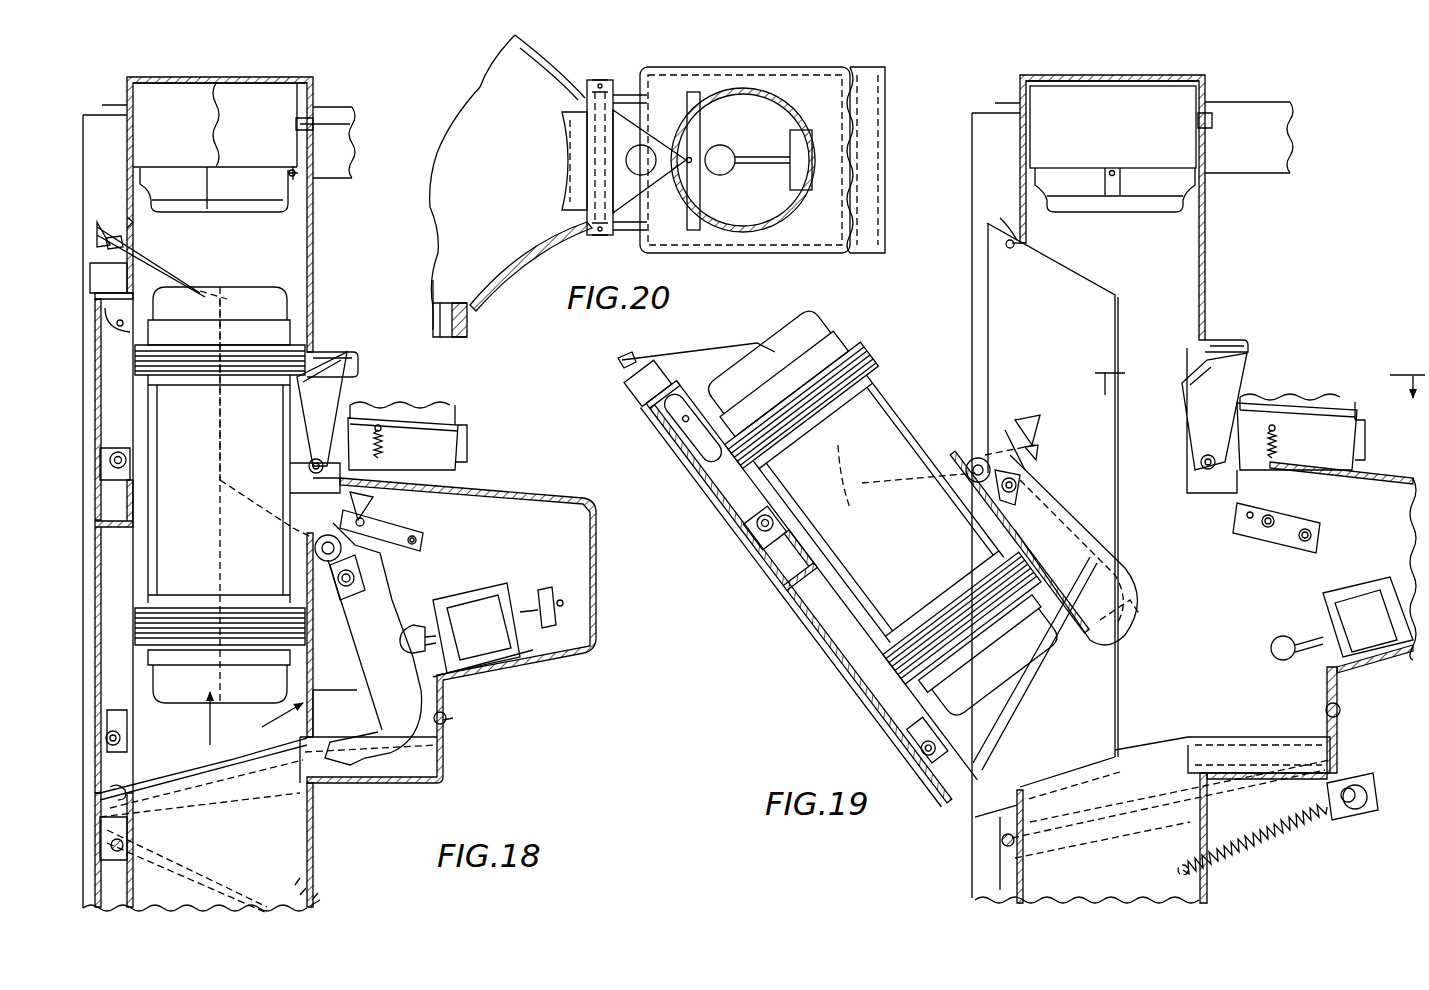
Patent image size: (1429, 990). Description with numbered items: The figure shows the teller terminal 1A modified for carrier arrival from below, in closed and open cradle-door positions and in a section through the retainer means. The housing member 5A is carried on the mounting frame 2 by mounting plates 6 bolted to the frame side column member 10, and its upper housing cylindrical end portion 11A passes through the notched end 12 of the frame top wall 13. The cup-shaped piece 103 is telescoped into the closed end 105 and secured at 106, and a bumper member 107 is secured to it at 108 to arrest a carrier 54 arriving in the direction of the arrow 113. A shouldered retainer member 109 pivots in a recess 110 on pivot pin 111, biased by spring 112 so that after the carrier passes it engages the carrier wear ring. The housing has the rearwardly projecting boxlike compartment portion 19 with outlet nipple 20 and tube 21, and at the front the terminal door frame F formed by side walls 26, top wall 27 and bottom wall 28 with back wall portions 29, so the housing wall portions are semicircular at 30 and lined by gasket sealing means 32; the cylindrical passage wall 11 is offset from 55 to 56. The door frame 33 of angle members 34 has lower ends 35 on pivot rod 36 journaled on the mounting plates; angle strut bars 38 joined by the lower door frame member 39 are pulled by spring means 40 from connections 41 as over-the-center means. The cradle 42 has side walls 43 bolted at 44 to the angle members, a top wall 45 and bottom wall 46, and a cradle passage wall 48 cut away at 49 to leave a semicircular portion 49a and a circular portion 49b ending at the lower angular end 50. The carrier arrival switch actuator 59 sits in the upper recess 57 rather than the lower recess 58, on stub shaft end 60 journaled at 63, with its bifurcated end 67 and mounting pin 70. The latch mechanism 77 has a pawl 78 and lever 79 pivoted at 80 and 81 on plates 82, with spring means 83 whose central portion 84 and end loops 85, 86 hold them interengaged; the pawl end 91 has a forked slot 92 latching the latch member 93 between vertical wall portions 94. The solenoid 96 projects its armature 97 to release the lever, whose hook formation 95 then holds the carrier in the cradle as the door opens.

In FIG. 18, the teller terminal 1A is at (316, 243).
In FIG. 19, the teller terminal 1A is at (1250, 252).
In FIG. 18, the mounting frame 2 is at (80, 130).
In FIG. 19, the mounting frame 2 is at (1295, 120).
In FIG. 19, the housing member 5A is at (1210, 297).
In FIG. 19, the mounting plates 6 is at (1005, 896).
In FIG. 19, the frame side column member 10 is at (990, 174).
In FIG. 18, the upper housing cylindrical end portion 11 is at (314, 280).
In FIG. 18, the upper housing cylindrical end portion 11A is at (127, 217).
In FIG. 19, the upper housing cylindrical end portion 11A is at (1027, 234).
In FIG. 19, the notched end 12 is at (1208, 102).
In FIG. 18, the frame top wall 13 is at (346, 107).
In FIG. 18, the boxlike compartment portion 19 is at (555, 542).
In FIG. 20, the boxlike compartment portion 19 is at (823, 218).
In FIG. 19, the boxlike compartment portion 19 is at (1388, 528).
In FIG. 18, the outlet nipple 20 is at (466, 441).
In FIG. 20, the outlet nipple 20 is at (784, 230).
In FIG. 19, the outlet nipple 20 is at (1340, 410).
In FIG. 18, the tube 21 is at (430, 416).
In FIG. 19, the side walls 26 is at (1058, 334).
In FIG. 18, the top wall 27 is at (160, 263).
In FIG. 19, the top wall 27 is at (1002, 225).
In FIG. 18, the bottom wall 28 is at (200, 772).
In FIG. 19, the bottom wall 28 is at (985, 812).
In FIG. 20, the back wall portions 29 is at (472, 340).
In FIG. 19, the back wall portions 29 is at (1120, 338).
In FIG. 20, the semicircular housing wall portions 30 is at (537, 90).
In FIG. 19, the semicircular housing wall portions 30 is at (1194, 262).
In FIG. 18, the gasket sealing means 32 is at (178, 778).
In FIG. 20, the gasket sealing means 32 is at (450, 300).
In FIG. 19, the gasket sealing means 32 is at (1006, 246).
In FIG. 19, the door frame 33 is at (766, 585).
In FIG. 18, the angle members 34 is at (108, 278).
In FIG. 19, the angle members 34 is at (646, 400).
In FIG. 18, the lower ends 35 is at (95, 830).
In FIG. 18, the pivot rod 36 is at (113, 847).
In FIG. 18, the angle strut bars 38 is at (215, 895).
In FIG. 19, the angle strut bars 38 is at (1240, 833).
In FIG. 19, the lower door frame member 39 is at (1356, 811).
In FIG. 18, the spring means 40 is at (314, 903).
In FIG. 19, the spring means 40 is at (1262, 832).
In FIG. 18, the connections 41 is at (313, 860).
In FIG. 19, the cradle 42 is at (728, 344).
In FIG. 18, the cradle side walls 43 is at (106, 243).
In FIG. 18, the bolts 44 is at (106, 736).
In FIG. 19, the bolts 44 is at (918, 758).
In FIG. 19, the cradle top wall 45 is at (618, 375).
In FIG. 18, the cradle bottom wall 46 is at (110, 790).
In FIG. 18, the cradle passage wall 48 is at (276, 721).
In FIG. 18, the cut-away zone 49 is at (292, 515).
In FIG. 19, the cut-away zone 49 is at (958, 468).
In FIG. 19, the semicircular upper cradle wall portion 49a is at (862, 516).
In FIG. 19, the circular cradle wall portion 49b is at (988, 530).
In FIG. 19, the lower angular end 50 is at (1013, 740).
In FIG. 18, the carrier 54 is at (196, 549).
In FIG. 19, the carrier 54 is at (812, 357).
In FIG. 19, the offset 55 is at (1128, 482).
In FIG. 19, the offset 56 is at (1160, 742).
In FIG. 18, the upper recess 57 is at (95, 438).
In FIG. 19, the upper recess 57 is at (676, 406).
In FIG. 18, the lower recess 58 is at (120, 553).
In FIG. 19, the lower recess 58 is at (845, 640).
In FIG. 19, the carrier arrival switch actuator 59 is at (730, 505).
In FIG. 19, the stub shaft end 60 is at (772, 520).
In FIG. 18, the pivot journal 63 is at (100, 465).
In FIG. 18, the bifurcated end 67 is at (115, 318).
In FIG. 18, the mounting pin 70 is at (117, 325).
In FIG. 19, the latch mechanism 77 is at (1092, 500).
In FIG. 18, the pawl 78 is at (318, 556).
In FIG. 19, the pawl 78 is at (990, 437).
In FIG. 18, the lever 79 is at (408, 692).
In FIG. 19, the lever 79 is at (1107, 580).
In FIG. 19, the pivot shaft 80 is at (986, 466).
In FIG. 18, the pivot shaft 81 is at (366, 576).
In FIG. 18, the plates 82 is at (348, 676).
In FIG. 19, the spring means 83 is at (1040, 462).
In FIG. 19, the central portion 84 is at (1016, 492).
In FIG. 19, the end loop 85 is at (1010, 426).
In FIG. 18, the end loop 86 is at (346, 610).
In FIG. 18, the pawl end 91 is at (372, 500).
In FIG. 19, the forked slot 92 is at (1040, 428).
In FIG. 19, the latch member 93 is at (1250, 520).
In FIG. 18, the vertical wall portions 94 is at (493, 544).
In FIG. 20, the vertical wall portions 94 is at (722, 67).
In FIG. 19, the vertical wall portions 94 is at (1233, 627).
In FIG. 18, the hook formation 95 is at (342, 750).
In FIG. 19, the hook formation 95 is at (1082, 656).
In FIG. 18, the solenoid 96 is at (485, 629).
In FIG. 20, the solenoid 96 is at (801, 140).
In FIG. 19, the solenoid 96 is at (1362, 652).
In FIG. 18, the armature 97 is at (416, 630).
In FIG. 20, the armature 97 is at (724, 146).
In FIG. 19, the armature 97 is at (1281, 661).
In FIG. 18, the cup-shaped piece 103 is at (189, 134).
In FIG. 19, the cup-shaped piece 103 is at (1130, 129).
In FIG. 18, the closed end 105 is at (214, 77).
In FIG. 19, the closed end 105 is at (1128, 77).
In FIG. 18, the securing means 106 is at (318, 127).
In FIG. 19, the securing means 106 is at (1210, 120).
In FIG. 18, the bumper member 107 is at (258, 212).
In FIG. 19, the bumper member 107 is at (1156, 196).
In FIG. 18, the securing point 108 is at (291, 168).
In FIG. 19, the securing point 108 is at (1113, 196).
In FIG. 18, the shouldered retainer member 109 is at (297, 420).
In FIG. 20, the shouldered retainer member 109 is at (560, 152).
In FIG. 19, the shouldered retainer member 109 is at (1185, 418).
In FIG. 18, the recess 110 is at (322, 349).
In FIG. 19, the recess 110 is at (1243, 350).
In FIG. 18, the pivot pin 111 is at (309, 466).
In FIG. 20, the pivot pin 111 is at (606, 79).
In FIG. 19, the pivot pin 111 is at (1205, 482).
In FIG. 18, the spring 112 is at (385, 452).
In FIG. 19, the spring 112 is at (1277, 457).
In FIG. 18, the arrow 113 is at (208, 732).
In FIG. 19, the terminal door frame F is at (985, 309).